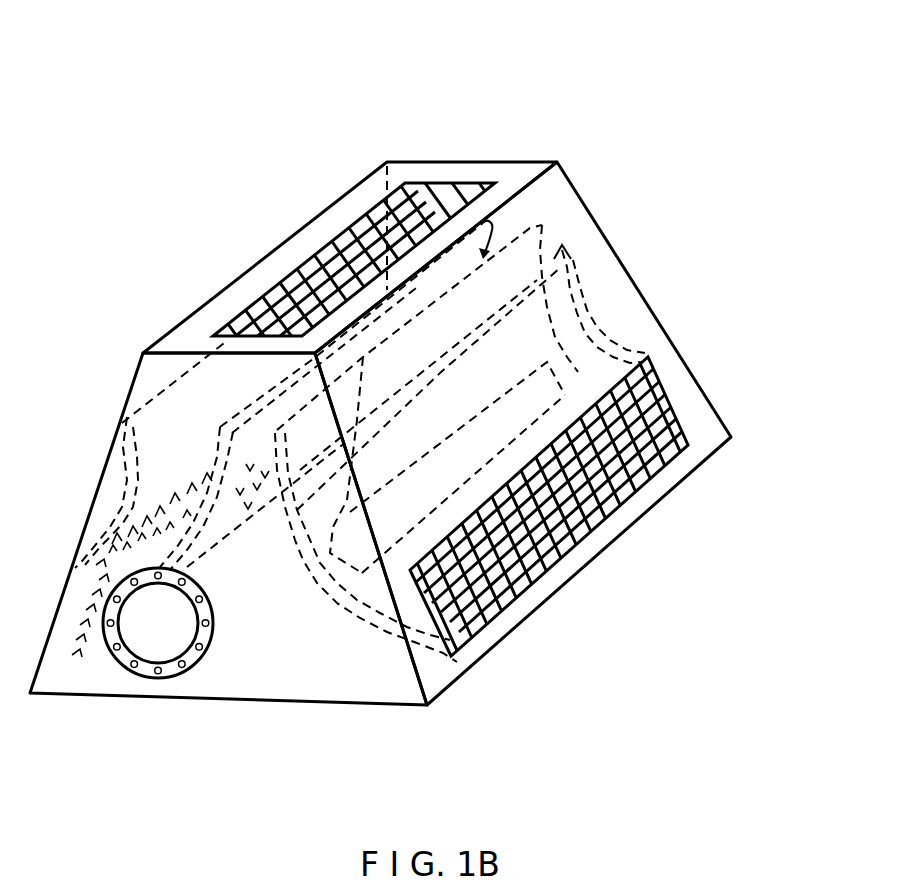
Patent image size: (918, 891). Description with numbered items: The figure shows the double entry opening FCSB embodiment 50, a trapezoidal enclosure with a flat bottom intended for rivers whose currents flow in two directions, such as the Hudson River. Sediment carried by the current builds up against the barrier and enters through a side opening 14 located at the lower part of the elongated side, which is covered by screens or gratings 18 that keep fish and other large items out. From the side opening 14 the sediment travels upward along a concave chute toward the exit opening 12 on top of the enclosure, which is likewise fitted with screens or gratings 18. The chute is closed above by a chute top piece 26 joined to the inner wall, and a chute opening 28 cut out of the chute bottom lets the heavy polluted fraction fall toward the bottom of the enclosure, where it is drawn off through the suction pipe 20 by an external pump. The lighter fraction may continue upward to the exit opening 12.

The double entry opening FCSB embodiment 50 is at (400, 92).
The exit opening 12 is at (428, 184).
The screens or gratings 18 is at (293, 319).
The side opening 14 is at (672, 407).
The suction pipe 20 is at (148, 672).
The chute top piece 26 is at (583, 312).
The chute opening 28 is at (560, 370).